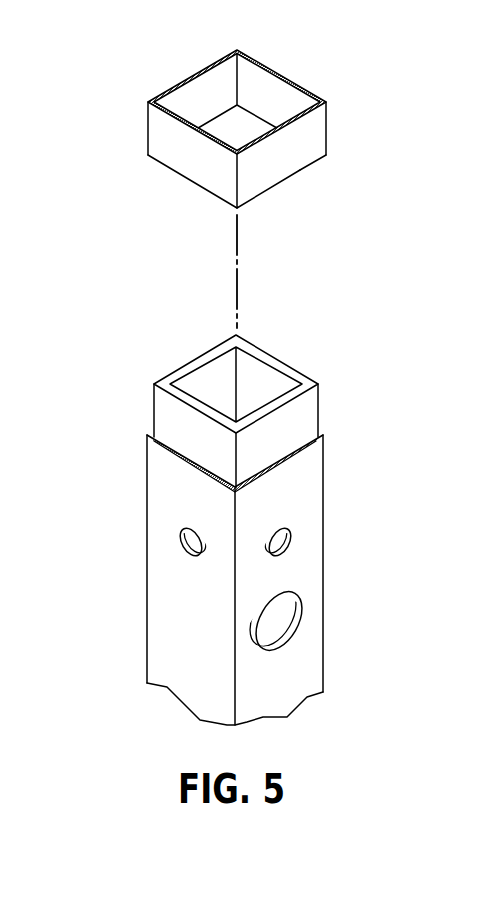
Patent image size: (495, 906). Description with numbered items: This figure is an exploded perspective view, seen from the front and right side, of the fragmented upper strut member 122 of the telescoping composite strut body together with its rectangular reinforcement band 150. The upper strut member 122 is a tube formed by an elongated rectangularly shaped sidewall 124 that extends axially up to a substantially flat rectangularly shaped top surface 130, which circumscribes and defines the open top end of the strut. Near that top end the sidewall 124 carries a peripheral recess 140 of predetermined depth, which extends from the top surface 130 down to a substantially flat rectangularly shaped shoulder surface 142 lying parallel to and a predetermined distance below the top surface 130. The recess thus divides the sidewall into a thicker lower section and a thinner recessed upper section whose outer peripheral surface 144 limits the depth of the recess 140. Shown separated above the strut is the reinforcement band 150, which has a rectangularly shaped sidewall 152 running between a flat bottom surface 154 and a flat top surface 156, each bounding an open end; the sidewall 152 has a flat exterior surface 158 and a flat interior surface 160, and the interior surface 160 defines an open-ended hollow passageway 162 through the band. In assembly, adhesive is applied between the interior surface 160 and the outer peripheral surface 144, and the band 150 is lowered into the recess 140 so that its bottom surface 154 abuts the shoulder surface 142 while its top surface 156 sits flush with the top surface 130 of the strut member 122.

The upper strut member 122 is at (350, 492).
The rectangularly shaped sidewall 124 is at (308, 655).
The top surface 130 is at (263, 355).
The peripheral recess 140 is at (312, 415).
The shoulder surface 142 is at (323, 436).
The outer peripheral surface 144 is at (157, 410).
The reinforcement band 150 is at (148, 82).
The rectangularly shaped sidewall 152 is at (313, 144).
The bottom surface 154 is at (265, 195).
The top surface 156 is at (255, 62).
The exterior surface 158 is at (182, 158).
The interior surface 160 is at (213, 83).
The hollow passageway 162 is at (265, 106).